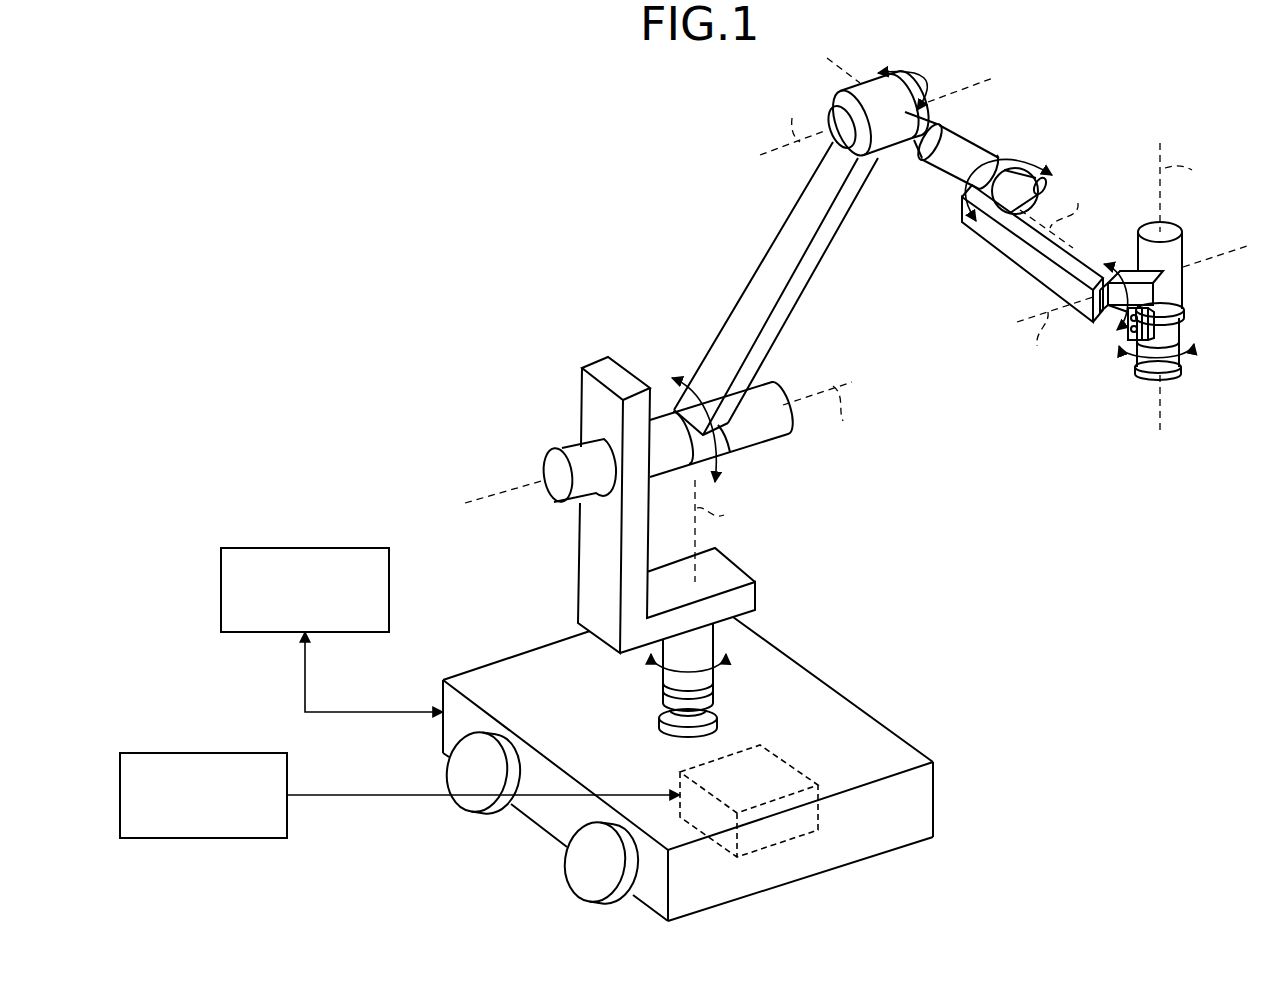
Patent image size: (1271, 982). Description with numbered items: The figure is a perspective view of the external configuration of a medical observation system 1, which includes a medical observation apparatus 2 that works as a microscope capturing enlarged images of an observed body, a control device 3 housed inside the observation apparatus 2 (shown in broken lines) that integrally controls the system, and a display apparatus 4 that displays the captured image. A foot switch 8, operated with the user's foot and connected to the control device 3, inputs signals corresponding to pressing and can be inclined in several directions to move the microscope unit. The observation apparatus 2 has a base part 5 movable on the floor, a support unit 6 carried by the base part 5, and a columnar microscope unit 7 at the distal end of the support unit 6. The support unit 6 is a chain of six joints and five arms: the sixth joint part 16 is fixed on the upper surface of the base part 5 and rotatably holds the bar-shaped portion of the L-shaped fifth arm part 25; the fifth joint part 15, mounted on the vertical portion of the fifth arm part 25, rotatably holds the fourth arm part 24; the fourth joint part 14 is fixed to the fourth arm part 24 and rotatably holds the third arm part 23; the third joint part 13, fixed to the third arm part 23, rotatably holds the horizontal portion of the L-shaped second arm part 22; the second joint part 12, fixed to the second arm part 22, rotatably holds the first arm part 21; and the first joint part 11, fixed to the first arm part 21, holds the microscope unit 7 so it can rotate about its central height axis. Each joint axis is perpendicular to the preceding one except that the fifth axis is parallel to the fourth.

The medical observation system 1 is at (486, 140).
The medical observation apparatus 2 is at (1024, 562).
The control device 3 is at (792, 763).
The display apparatus 4 is at (347, 527).
The base part 5 is at (913, 802).
The support unit 6 is at (732, 313).
The microscope unit 7 is at (1185, 313).
The foot switch 8 is at (246, 733).
The first joint part 11 is at (1153, 228).
The second joint part 12 is at (1125, 319).
The third joint part 13 is at (962, 187).
The fourth joint part 14 is at (878, 93).
The fifth joint part 15 is at (578, 455).
The sixth joint part 16 is at (670, 693).
The first arm part 21 is at (1128, 280).
The second arm part 22 is at (1023, 260).
The third arm part 23 is at (947, 166).
The fourth arm part 24 is at (797, 228).
The fifth arm part 25 is at (588, 573).